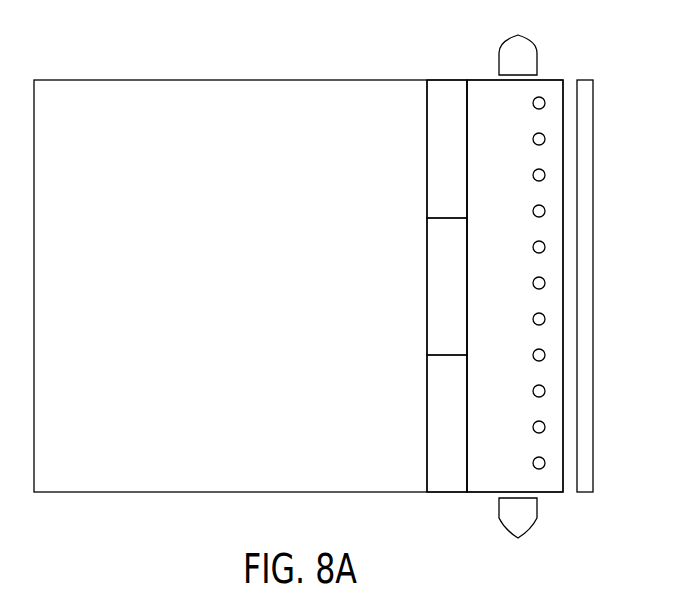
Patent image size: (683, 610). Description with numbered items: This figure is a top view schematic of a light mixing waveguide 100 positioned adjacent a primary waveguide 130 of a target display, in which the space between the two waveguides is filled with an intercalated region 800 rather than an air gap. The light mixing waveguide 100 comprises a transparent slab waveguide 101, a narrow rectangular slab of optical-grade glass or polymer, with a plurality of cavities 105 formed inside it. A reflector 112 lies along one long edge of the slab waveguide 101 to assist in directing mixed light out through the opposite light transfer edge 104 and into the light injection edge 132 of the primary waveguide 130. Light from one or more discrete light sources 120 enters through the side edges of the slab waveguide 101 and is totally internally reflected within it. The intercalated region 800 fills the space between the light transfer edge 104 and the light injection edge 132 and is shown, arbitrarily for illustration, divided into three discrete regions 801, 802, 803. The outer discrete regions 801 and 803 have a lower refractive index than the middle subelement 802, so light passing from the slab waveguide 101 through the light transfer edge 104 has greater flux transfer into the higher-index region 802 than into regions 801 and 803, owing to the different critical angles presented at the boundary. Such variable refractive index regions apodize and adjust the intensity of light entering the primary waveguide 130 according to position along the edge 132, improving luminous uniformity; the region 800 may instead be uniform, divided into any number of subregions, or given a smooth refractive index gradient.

The light mixing waveguide 100 is at (565, 56).
The transparent slab waveguide 101 is at (518, 335).
The light transfer edge 104 is at (467, 478).
The cavities 105 is at (536, 217).
The reflector 112 is at (585, 324).
The light sources 120 is at (525, 537).
The primary waveguide 130 is at (214, 275).
The light injection edge 132 is at (428, 467).
The intercalated region 800 is at (467, 72).
The discrete region 801 is at (443, 408).
The middle subelement 802 is at (441, 290).
The discrete region 803 is at (441, 170).